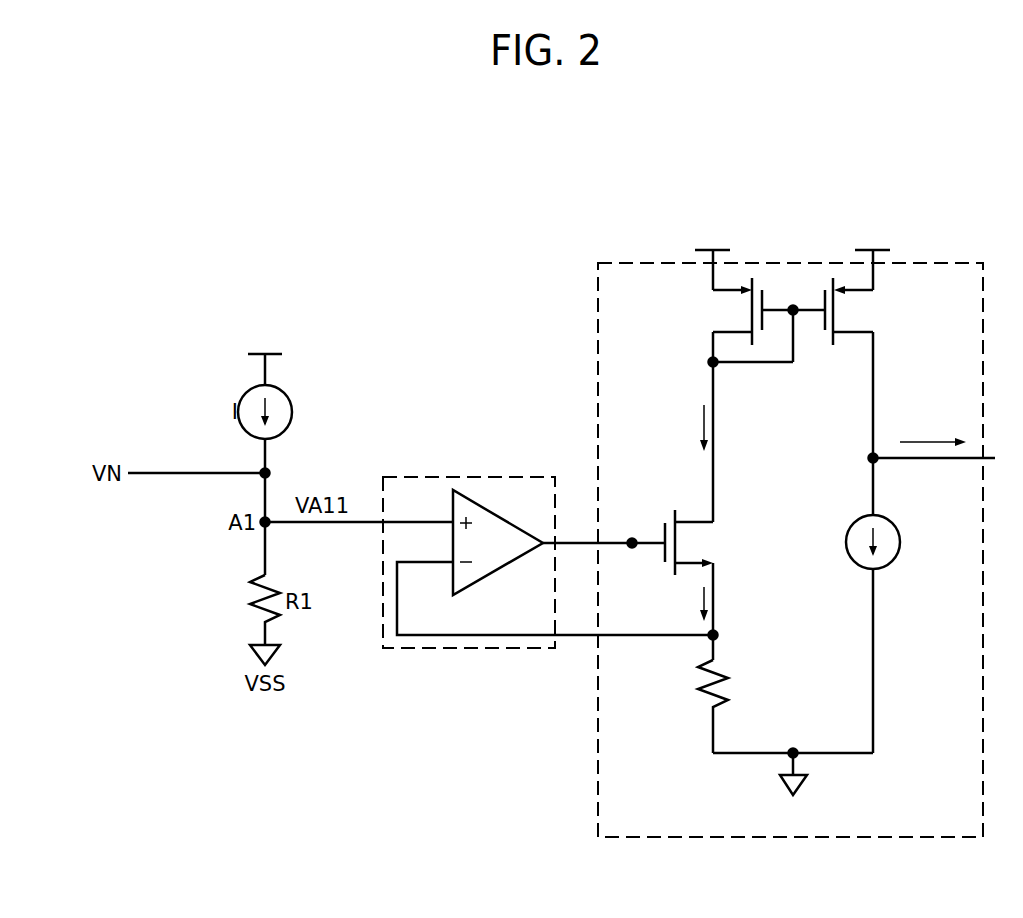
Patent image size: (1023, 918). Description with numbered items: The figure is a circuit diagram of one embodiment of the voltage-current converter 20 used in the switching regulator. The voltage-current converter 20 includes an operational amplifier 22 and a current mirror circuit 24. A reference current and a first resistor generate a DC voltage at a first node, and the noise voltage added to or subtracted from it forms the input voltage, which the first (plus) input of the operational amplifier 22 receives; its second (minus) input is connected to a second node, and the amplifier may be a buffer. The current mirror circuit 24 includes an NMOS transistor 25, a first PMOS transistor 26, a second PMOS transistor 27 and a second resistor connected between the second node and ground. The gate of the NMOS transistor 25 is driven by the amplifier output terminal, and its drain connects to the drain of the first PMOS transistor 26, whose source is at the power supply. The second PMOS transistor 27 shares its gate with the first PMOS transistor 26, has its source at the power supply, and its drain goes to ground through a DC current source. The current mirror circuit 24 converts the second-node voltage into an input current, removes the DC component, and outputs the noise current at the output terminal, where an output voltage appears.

The voltage-current converter 20 is at (940, 176).
The operational amplifier 22 is at (470, 477).
The current mirror circuit 24 is at (776, 262).
The NMOS transistor 25 is at (703, 546).
The first PMOS transistor 26 is at (727, 311).
The second PMOS transistor 27 is at (860, 313).